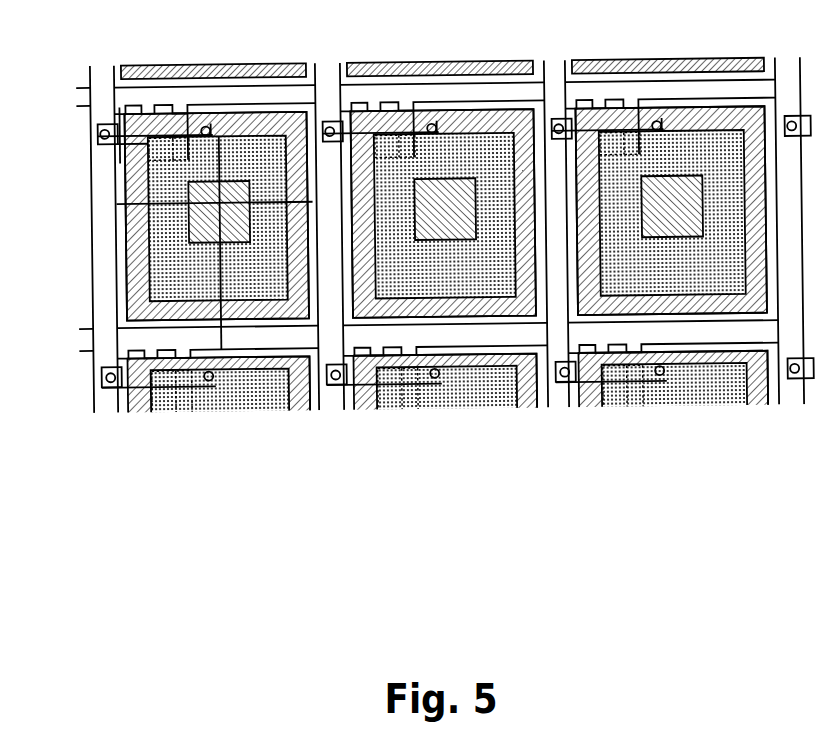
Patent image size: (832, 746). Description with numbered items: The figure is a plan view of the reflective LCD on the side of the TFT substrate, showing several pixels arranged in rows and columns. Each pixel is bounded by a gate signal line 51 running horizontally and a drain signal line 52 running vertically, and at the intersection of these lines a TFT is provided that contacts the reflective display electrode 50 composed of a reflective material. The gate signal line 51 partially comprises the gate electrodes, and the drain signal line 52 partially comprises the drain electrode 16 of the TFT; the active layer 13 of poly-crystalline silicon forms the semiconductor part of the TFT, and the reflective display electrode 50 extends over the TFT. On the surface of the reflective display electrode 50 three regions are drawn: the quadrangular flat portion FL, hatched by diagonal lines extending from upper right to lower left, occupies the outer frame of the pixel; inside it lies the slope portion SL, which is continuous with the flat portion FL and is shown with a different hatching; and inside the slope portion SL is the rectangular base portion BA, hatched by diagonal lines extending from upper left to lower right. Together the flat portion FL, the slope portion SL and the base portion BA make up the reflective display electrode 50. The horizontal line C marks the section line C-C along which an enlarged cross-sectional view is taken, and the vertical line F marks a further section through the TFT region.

The drain signal line 52 is at (100, 71).
The gate signal line 51 is at (82, 98).
The active layer 13 is at (121, 112).
The drain electrode 16 is at (110, 147).
The reflective display electrode 50 is at (127, 312).
The base portion BA is at (192, 230).
The slope portion SL is at (163, 270).
The flat portion FL is at (127, 287).
The section line F- F is at (99, 133).
The section line C- C is at (219, 203).